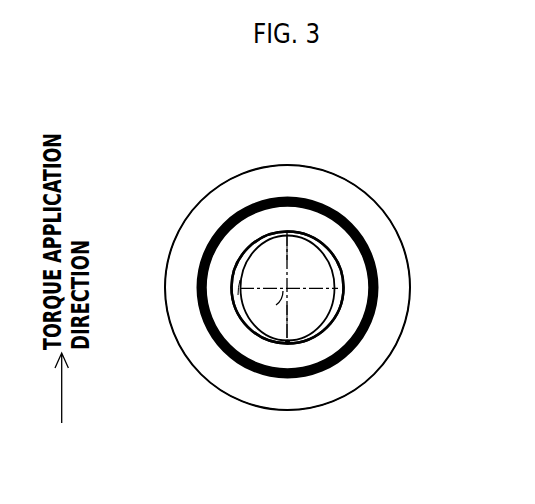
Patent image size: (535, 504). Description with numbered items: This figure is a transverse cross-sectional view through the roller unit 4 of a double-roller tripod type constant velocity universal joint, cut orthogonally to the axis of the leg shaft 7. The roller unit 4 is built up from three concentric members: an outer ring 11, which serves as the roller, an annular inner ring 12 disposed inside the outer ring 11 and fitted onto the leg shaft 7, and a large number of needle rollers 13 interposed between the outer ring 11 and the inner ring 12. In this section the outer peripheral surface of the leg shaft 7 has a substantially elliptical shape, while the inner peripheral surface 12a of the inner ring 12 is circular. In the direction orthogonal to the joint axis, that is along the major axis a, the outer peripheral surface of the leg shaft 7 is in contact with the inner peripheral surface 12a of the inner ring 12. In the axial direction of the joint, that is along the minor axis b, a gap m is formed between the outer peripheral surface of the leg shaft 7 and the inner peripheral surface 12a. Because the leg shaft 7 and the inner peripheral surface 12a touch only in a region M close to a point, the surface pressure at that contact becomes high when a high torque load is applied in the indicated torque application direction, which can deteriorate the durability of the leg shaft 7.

The roller unit 4 is at (397, 188).
The leg shaft 7 is at (308, 317).
The outer ring 11 is at (333, 190).
The inner ring 12 is at (242, 345).
The inner peripheral surface 12a is at (333, 278).
The needle rollers 13 is at (203, 257).
The gap m is at (238, 295).
The region M is at (288, 342).
The major axis a is at (272, 255).
The minor axis b is at (277, 321).